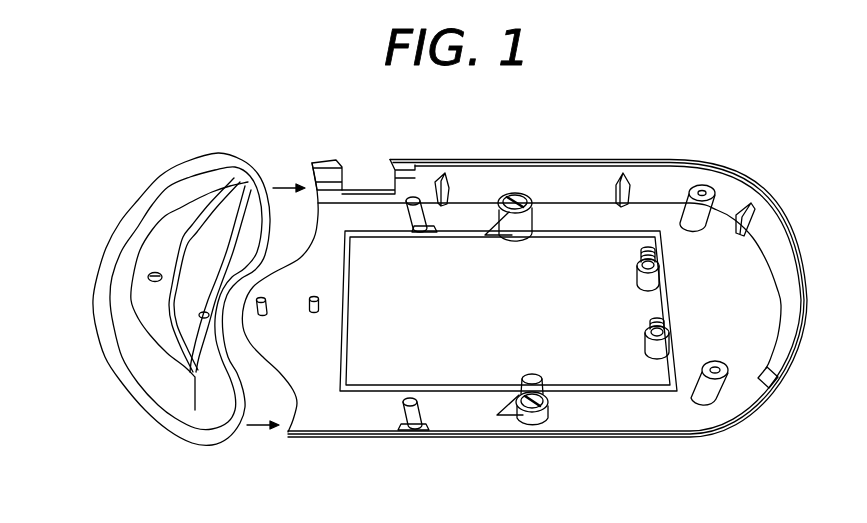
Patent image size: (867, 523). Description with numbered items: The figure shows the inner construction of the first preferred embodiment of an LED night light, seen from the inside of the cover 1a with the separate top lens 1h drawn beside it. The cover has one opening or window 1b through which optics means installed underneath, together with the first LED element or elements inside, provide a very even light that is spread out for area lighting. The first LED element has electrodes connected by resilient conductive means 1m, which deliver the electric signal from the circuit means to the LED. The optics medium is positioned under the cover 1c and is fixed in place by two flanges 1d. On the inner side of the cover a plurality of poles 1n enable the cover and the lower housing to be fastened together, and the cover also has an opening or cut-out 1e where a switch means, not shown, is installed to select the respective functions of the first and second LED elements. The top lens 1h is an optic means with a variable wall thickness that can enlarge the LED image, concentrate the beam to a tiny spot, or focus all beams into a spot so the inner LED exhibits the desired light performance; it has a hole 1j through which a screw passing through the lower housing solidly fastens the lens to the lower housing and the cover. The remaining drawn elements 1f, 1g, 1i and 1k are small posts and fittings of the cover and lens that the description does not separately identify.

The cover 1a is at (740, 413).
The opening or window 1b is at (633, 397).
The cover 1c is at (567, 370).
The flanges 1d is at (530, 383).
The opening or cut-out 1e is at (362, 186).
The post 1f is at (320, 304).
The post 1g is at (266, 314).
The top lens 1h is at (108, 257).
The hole 1i is at (155, 272).
The hole 1j is at (206, 311).
The spring post 1k is at (628, 265).
The resilient conductive means 1m is at (650, 254).
The poles 1n is at (703, 188).